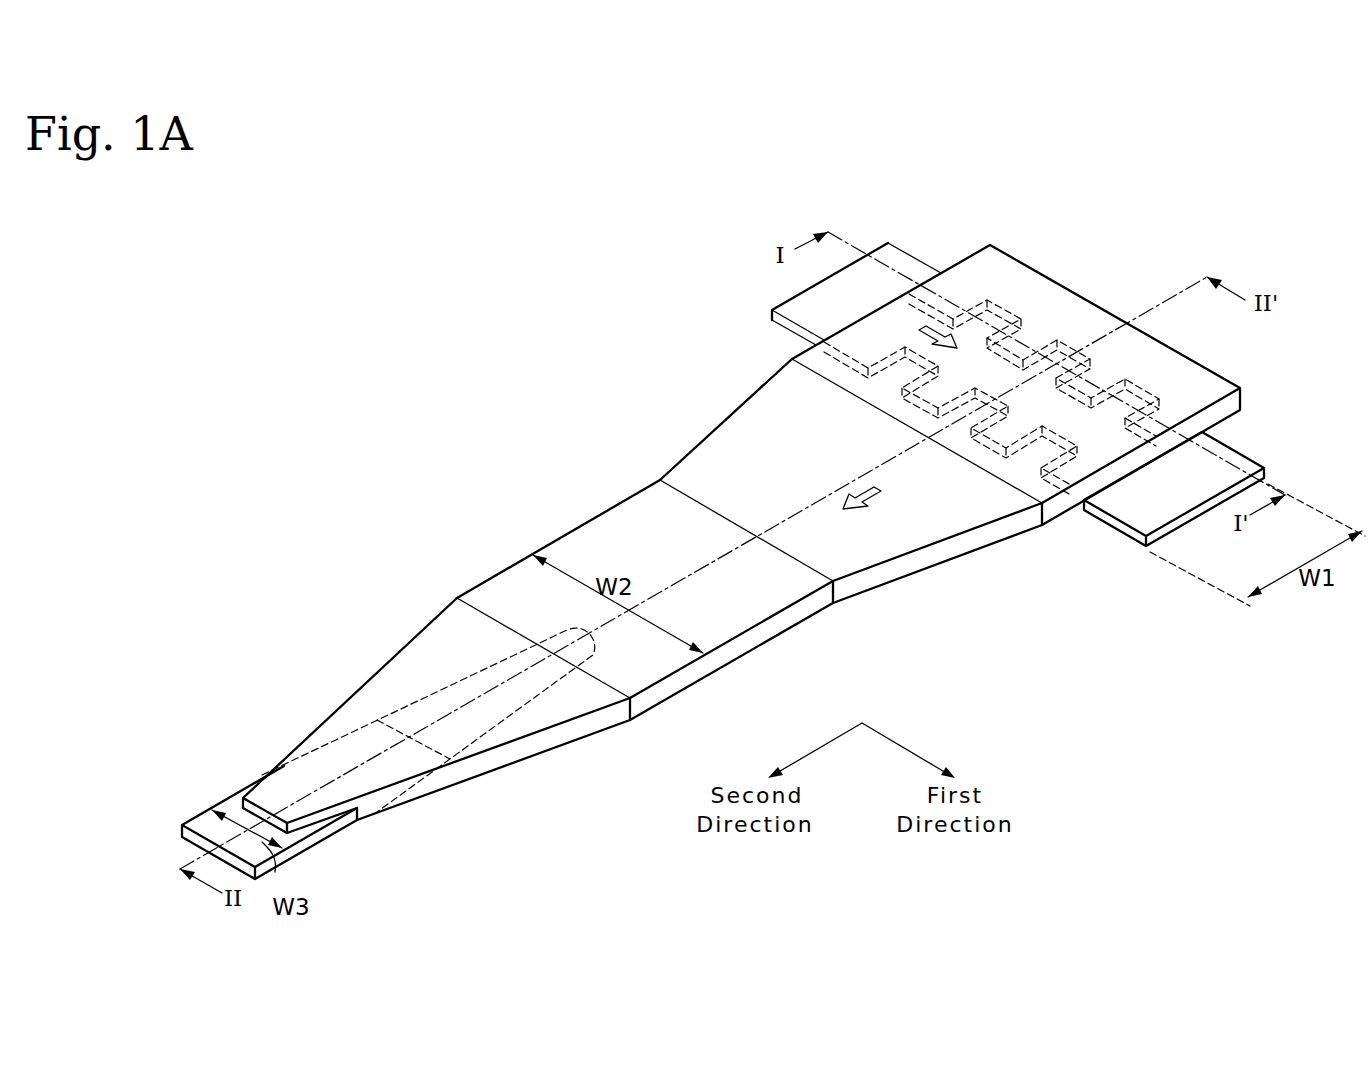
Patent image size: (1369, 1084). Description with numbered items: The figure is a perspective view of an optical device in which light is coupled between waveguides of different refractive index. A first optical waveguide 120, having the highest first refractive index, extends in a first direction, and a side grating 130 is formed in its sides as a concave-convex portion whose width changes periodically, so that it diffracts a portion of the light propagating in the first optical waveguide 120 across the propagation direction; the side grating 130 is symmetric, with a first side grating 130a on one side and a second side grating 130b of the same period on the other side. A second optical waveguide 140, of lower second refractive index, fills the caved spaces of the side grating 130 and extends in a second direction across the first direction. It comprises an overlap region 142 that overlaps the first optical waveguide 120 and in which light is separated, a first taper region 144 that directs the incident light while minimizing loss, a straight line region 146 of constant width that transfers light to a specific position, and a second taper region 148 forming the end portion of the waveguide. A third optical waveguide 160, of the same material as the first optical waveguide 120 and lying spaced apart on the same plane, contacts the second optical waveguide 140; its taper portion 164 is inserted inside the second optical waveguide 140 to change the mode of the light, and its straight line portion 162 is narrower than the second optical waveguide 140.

The first optical waveguide 120 is at (1245, 460).
The side grating 130 is at (991, 334).
The first side grating 130a is at (893, 372).
The second side grating 130b is at (988, 326).
The second optical waveguide 140 is at (741, 539).
The overlap region 142 is at (964, 385).
The first taper region 144 is at (723, 421).
The straight line region 146 is at (570, 533).
The second taper region 148 is at (440, 612).
The third optical waveguide 160 is at (388, 705).
The straight line portion 162 is at (227, 810).
The taper portion 164 is at (445, 692).